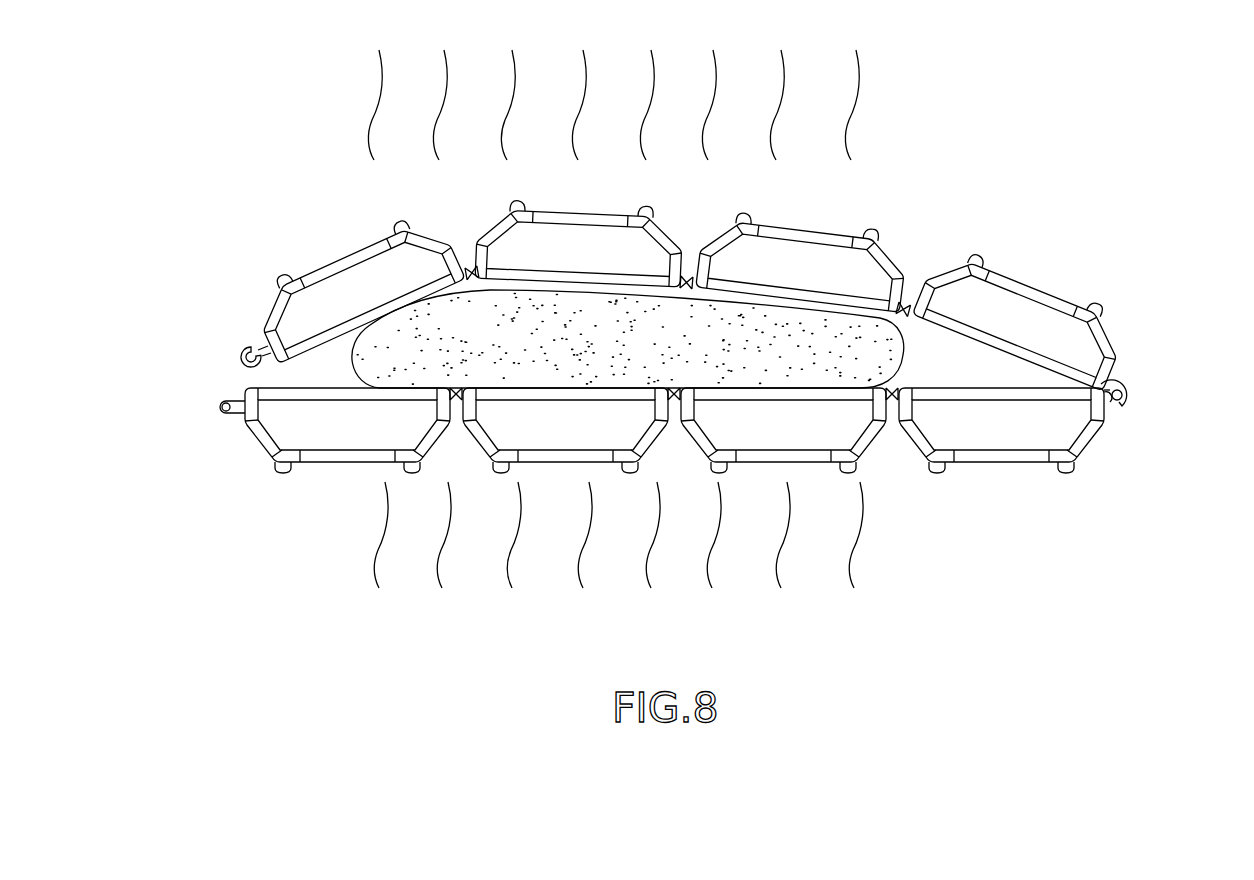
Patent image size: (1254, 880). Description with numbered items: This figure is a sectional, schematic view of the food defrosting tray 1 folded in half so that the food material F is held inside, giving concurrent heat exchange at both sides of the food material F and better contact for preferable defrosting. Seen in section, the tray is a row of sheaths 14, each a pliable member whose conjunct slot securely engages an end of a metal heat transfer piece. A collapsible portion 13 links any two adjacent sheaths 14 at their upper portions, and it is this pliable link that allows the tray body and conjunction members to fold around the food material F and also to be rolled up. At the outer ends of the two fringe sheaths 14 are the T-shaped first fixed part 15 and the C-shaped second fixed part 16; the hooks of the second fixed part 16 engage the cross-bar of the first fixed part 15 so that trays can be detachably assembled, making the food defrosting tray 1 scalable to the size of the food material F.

The food defrosting tray 1 is at (226, 266).
The food material F is at (410, 335).
The collapsible portion 13 is at (893, 401).
The sheath 14 is at (365, 456).
The first fixed part 15 is at (218, 406).
The second fixed part 16 is at (244, 350).